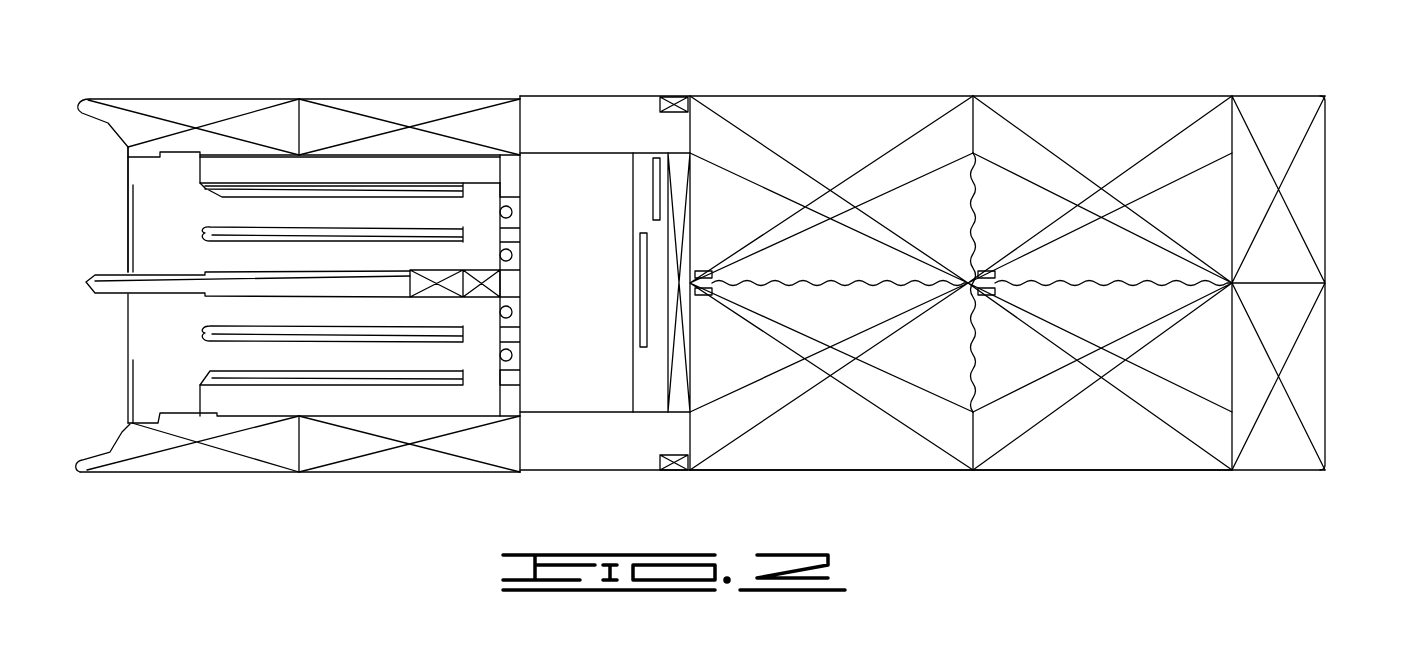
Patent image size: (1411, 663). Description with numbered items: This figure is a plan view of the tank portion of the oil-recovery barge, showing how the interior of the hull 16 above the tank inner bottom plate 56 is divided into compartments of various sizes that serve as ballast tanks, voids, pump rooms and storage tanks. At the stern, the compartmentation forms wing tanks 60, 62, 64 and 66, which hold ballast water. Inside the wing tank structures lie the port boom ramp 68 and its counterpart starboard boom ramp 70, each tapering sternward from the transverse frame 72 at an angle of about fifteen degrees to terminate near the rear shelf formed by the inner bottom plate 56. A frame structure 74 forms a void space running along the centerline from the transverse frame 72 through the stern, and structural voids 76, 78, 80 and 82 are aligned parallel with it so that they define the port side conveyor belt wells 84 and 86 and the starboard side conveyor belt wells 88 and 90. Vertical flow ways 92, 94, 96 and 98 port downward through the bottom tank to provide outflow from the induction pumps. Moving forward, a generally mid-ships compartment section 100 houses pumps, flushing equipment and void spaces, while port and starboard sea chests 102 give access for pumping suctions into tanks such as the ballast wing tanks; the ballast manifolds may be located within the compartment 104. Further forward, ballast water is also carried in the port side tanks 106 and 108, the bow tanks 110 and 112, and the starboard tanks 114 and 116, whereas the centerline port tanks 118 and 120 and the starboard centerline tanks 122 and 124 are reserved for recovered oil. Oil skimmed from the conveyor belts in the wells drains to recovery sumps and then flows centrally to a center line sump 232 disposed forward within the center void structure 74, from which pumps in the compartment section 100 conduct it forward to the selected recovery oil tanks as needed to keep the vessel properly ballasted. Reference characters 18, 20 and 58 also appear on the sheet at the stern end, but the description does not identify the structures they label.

The hull 16 is at (1186, 80).
The end truss section 18 is at (1262, 80).
The base section 20 is at (133, 82).
The tank inner bottom plate 56 is at (172, 362).
The side plate 58 is at (126, 333).
The wing tank 60 is at (402, 108).
The wing tank 62 is at (186, 103).
The wing tank 64 is at (398, 462).
The wing tank 66 is at (153, 463).
The port boom ramp 68 is at (315, 165).
The starboard boom ramp 70 is at (348, 400).
The transverse frame 72 is at (521, 113).
The frame structure 74 is at (178, 288).
The structural void 76 is at (291, 190).
The structural void 78 is at (335, 227).
The structural void 80 is at (281, 335).
The structural void 82 is at (305, 378).
The port side conveyor belt well 84 is at (258, 222).
The port side conveyor belt well 86 is at (258, 267).
The starboard side conveyor belt well 88 is at (256, 370).
The starboard side conveyor belt well 90 is at (256, 322).
The vertical flow way 92 is at (512, 210).
The vertical flow way 94 is at (512, 254).
The vertical flow way 96 is at (514, 312).
The vertical flow way 98 is at (514, 354).
The mid-ships compartment section 100 is at (580, 152).
The sea chest 102 is at (683, 98).
The compartment 104 is at (663, 290).
The port side tank 106 is at (823, 108).
The port side tank 108 is at (1073, 108).
The bow tank 110 is at (1305, 197).
The bow tank 112 is at (1303, 374).
The starboard tank 114 is at (1083, 455).
The starboard tank 116 is at (828, 455).
The centerline port tank 118 is at (937, 217).
The centerline port tank 120 is at (1112, 262).
The starboard centerline tank 122 is at (1112, 312).
The starboard centerline tank 124 is at (937, 357).
The center line sump 232 is at (508, 286).